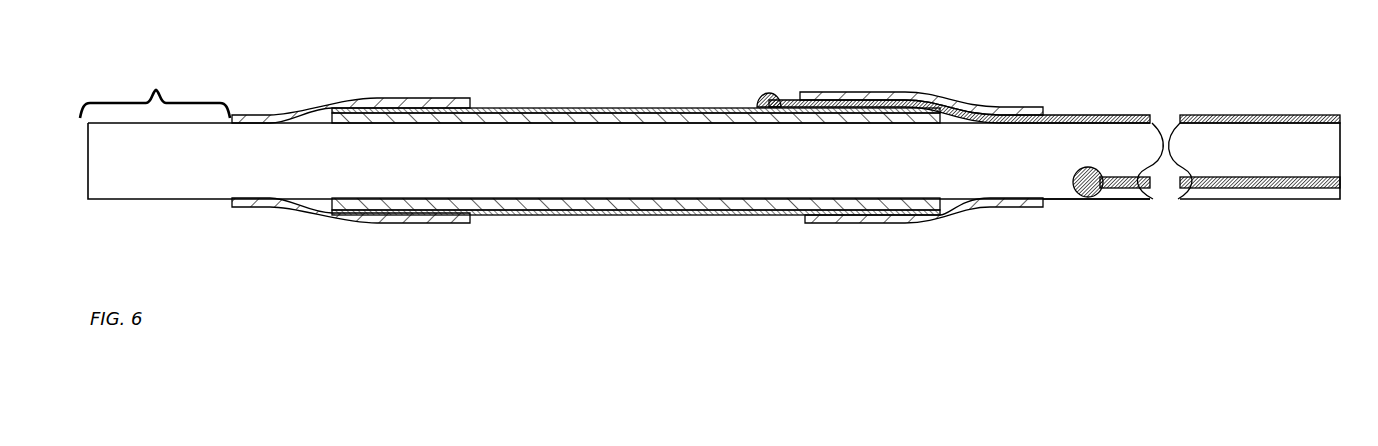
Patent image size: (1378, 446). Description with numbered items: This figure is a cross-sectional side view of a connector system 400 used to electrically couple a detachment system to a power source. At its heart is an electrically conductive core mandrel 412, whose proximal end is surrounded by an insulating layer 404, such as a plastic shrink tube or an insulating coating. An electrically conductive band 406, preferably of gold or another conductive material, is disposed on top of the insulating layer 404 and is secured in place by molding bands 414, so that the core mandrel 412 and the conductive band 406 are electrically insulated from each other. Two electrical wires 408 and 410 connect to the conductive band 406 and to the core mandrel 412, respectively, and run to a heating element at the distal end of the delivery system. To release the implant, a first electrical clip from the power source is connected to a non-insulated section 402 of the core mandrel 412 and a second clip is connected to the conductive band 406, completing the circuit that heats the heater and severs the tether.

The connector system 400 is at (394, 256).
The non-insulated section 402 is at (155, 91).
The insulating layer 404 is at (511, 118).
The conductive band 406 is at (607, 108).
The electrical wire 408 is at (1085, 115).
The electrical wire 410 is at (1122, 188).
The core mandrel 412 is at (1058, 200).
The molding bands 414 is at (412, 98).